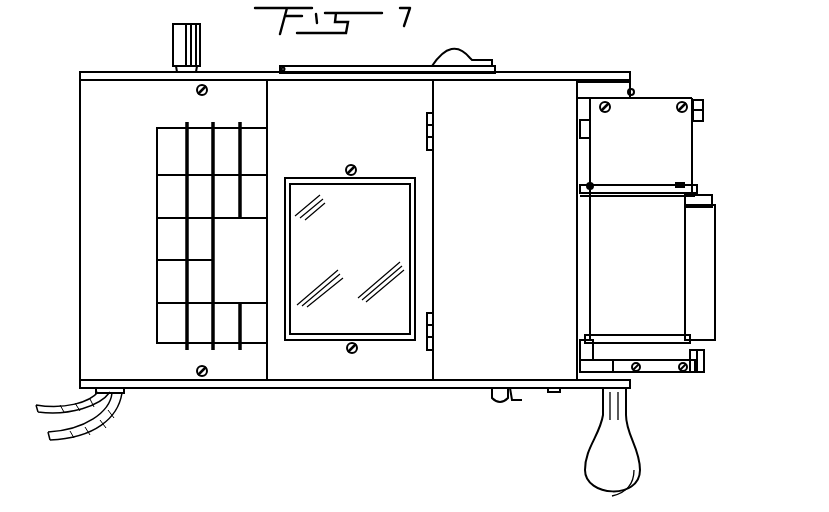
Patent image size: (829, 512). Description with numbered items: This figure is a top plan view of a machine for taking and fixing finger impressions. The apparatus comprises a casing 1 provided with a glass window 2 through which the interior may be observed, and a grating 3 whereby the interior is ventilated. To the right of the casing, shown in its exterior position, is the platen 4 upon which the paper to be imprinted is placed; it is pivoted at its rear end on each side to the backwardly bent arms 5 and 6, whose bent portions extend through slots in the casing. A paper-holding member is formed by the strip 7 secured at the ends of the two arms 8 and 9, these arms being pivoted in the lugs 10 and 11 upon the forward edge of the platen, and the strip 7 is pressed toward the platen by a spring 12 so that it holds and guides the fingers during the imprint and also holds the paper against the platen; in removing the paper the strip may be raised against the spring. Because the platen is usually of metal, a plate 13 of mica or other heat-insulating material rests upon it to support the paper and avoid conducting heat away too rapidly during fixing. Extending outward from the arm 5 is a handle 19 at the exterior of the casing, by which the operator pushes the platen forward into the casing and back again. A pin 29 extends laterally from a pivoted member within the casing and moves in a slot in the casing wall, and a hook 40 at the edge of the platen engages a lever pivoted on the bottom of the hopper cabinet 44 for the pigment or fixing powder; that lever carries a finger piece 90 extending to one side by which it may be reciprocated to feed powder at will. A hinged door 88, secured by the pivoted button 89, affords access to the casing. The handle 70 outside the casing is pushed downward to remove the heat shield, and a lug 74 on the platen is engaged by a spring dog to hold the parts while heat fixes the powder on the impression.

The casing 1 is at (346, 386).
The glass window 2 is at (400, 252).
The grating 3 is at (190, 323).
The platen 4 is at (676, 161).
The backwardly bent arm 5 is at (705, 117).
The backwardly bent arm 6 is at (705, 356).
The strip 7 is at (703, 258).
The arm 8 is at (643, 340).
The arm 9 is at (638, 196).
The lug 10 is at (582, 345).
The lug 11 is at (582, 202).
The spring 12 is at (632, 186).
The plate of mica 13 is at (660, 183).
The handle 19 is at (622, 444).
The pin 29 is at (518, 402).
The hook 40 is at (582, 370).
The hopper cabinet 44 is at (432, 365).
The handle 70 is at (172, 37).
The lug 74 is at (579, 128).
The hinged door 88 is at (400, 68).
The pivoted button 89 is at (448, 54).
The finger piece 90 is at (495, 405).